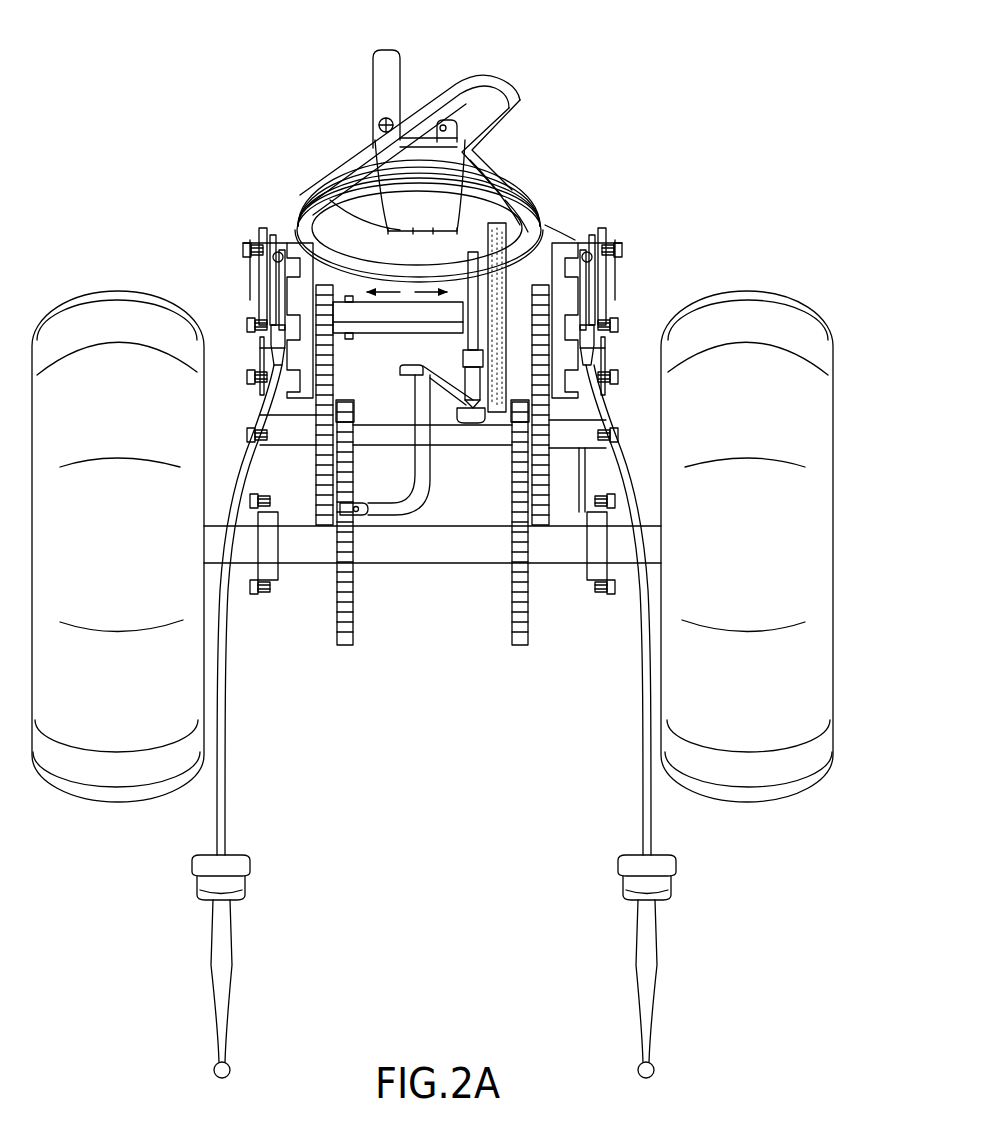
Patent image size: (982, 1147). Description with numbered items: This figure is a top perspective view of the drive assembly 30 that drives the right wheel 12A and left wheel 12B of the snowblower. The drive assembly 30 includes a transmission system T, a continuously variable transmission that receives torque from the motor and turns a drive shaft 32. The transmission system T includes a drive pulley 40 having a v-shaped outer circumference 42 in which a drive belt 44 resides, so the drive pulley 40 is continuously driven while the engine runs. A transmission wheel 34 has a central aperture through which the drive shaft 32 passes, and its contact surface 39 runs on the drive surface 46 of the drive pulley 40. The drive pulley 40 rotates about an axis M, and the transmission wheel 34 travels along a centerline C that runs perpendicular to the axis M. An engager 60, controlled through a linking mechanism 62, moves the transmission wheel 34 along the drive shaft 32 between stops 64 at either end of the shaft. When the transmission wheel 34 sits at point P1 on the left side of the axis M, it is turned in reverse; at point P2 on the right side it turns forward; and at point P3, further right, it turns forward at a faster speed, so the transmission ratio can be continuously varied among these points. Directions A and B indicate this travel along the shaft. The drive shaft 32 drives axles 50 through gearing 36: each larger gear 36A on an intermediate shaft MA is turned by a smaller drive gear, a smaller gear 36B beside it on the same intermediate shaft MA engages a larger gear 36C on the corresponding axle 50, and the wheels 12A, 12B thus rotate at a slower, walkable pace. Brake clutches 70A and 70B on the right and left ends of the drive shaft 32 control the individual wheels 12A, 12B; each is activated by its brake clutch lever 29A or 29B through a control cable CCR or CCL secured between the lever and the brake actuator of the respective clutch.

The drive assembly 30 is at (650, 100).
The right wheel 12A is at (762, 797).
The left wheel 12B is at (83, 792).
The brake clutch lever 29A is at (655, 990).
The brake clutch lever 29B is at (216, 980).
The control cable CCL is at (228, 800).
The control cable CCR is at (640, 802).
The drive shaft 32 is at (373, 330).
The transmission wheel 34 is at (535, 228).
The gearing 36 is at (306, 463).
The large gear 36A is at (325, 418).
The smaller gear 36B is at (352, 444).
The larger gear 36C is at (347, 632).
The contact surface 39 is at (505, 280).
The drive pulley 40 is at (303, 223).
The v-shaped outer circumference 42 is at (333, 172).
The drive belt 44 is at (482, 82).
The drive surface 46 is at (354, 244).
The axles 50 is at (310, 578).
The engager 60 is at (467, 353).
The linking mechanism 62 is at (430, 503).
The stops 64 is at (285, 348).
The brake clutch 70A is at (661, 283).
The brake clutch 70B is at (203, 283).
The intermediate shaft MA is at (282, 442).
The axis M is at (372, 172).
The direction A is at (389, 290).
The direction B is at (424, 290).
The centerline C is at (528, 195).
The transmission system T is at (580, 201).
The point P1 is at (360, 220).
The point P2 is at (487, 160).
The point P3 is at (530, 197).